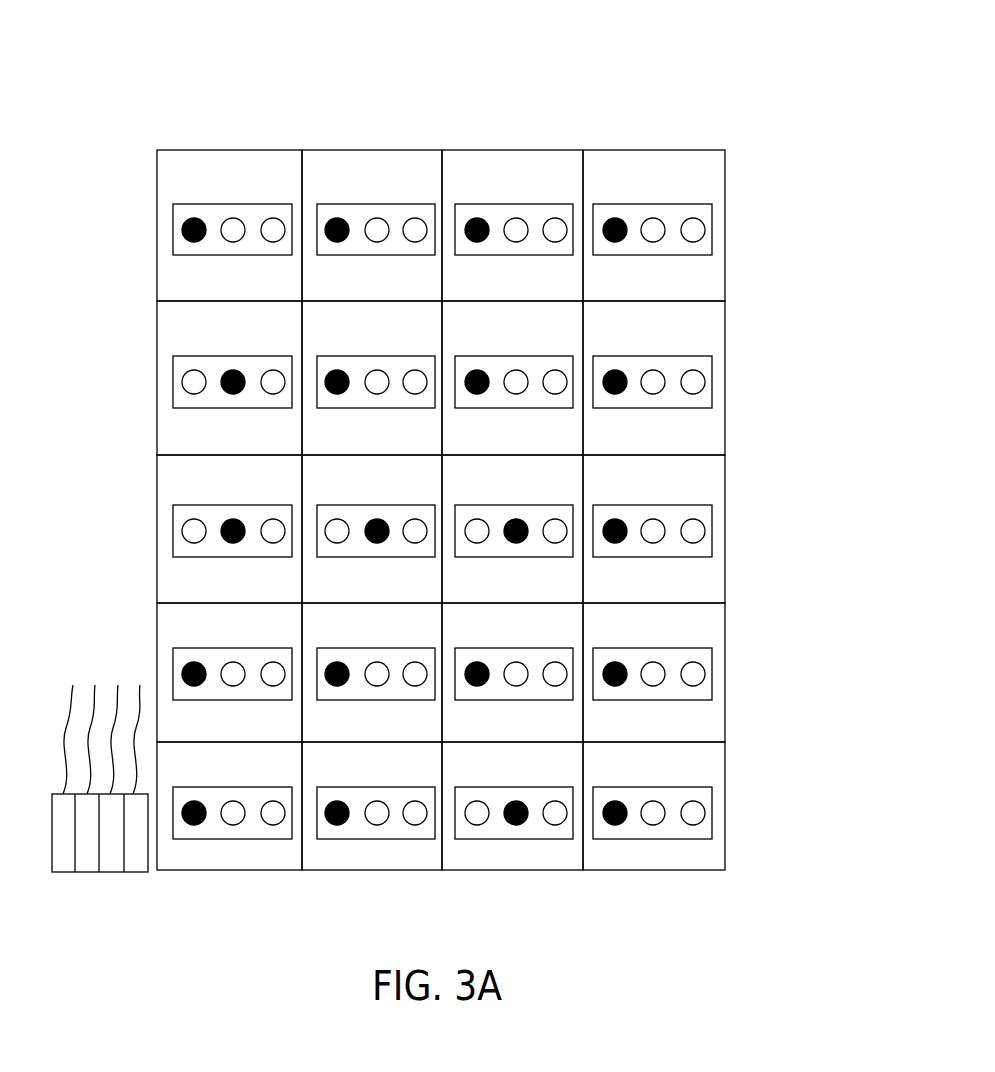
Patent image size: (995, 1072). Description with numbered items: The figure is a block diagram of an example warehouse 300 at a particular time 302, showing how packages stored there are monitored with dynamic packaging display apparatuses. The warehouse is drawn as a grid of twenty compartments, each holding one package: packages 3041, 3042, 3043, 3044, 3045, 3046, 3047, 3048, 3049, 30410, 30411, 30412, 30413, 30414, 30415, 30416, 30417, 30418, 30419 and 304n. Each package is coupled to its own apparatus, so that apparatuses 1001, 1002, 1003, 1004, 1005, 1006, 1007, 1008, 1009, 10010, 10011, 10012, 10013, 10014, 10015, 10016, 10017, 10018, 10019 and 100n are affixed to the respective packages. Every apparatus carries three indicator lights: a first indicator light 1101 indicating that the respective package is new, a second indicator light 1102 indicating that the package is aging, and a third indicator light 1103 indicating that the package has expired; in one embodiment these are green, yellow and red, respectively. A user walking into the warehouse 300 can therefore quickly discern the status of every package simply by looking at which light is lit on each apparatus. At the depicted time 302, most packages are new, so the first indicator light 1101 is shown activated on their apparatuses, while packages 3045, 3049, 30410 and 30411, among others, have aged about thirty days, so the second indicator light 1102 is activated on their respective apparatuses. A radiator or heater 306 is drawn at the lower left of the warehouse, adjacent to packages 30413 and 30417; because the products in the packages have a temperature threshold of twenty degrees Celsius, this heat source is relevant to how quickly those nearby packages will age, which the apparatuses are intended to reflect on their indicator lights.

The warehouse 300 is at (577, 48).
The time 302 is at (718, 72).
The radiator or heater 306 is at (93, 862).
The package 3041 is at (245, 157).
The package 3042 is at (368, 157).
The package 3043 is at (497, 157).
The package 3044 is at (630, 157).
The package 3045 is at (200, 323).
The package 3046 is at (327, 323).
The package 3047 is at (477, 323).
The package 3048 is at (620, 323).
The package 3049 is at (200, 480).
The package 30410 is at (342, 480).
The package 30411 is at (478, 480).
The package 30412 is at (620, 480).
The package 30413 is at (193, 630).
The package 30414 is at (343, 630).
The package 30415 is at (478, 630).
The package 30416 is at (618, 630).
The package 30417 is at (207, 767).
The package 30418 is at (332, 767).
The package 30419 is at (478, 767).
The package 304n is at (618, 767).
The dynamic packaging display apparatus 1001 is at (236, 248).
The dynamic packaging display apparatus 1002 is at (387, 255).
The dynamic packaging display apparatus 1003 is at (523, 255).
The dynamic packaging display apparatus 1004 is at (670, 255).
The dynamic packaging display apparatus 1005 is at (262, 408).
The dynamic packaging display apparatus 1006 is at (395, 408).
The dynamic packaging display apparatus 1007 is at (523, 408).
The dynamic packaging display apparatus 1008 is at (668, 408).
The dynamic packaging display apparatus 1009 is at (248, 557).
The dynamic packaging display apparatus 10010 is at (390, 557).
The dynamic packaging display apparatus 10011 is at (523, 557).
The dynamic packaging display apparatus 10012 is at (665, 557).
The dynamic packaging display apparatus 10013 is at (250, 700).
The dynamic packaging display apparatus 10014 is at (388, 700).
The dynamic packaging display apparatus 10015 is at (523, 700).
The dynamic packaging display apparatus 10016 is at (665, 700).
The dynamic packaging display apparatus 10017 is at (260, 839).
The dynamic packaging display apparatus 10018 is at (397, 839).
The dynamic packaging display apparatus 10019 is at (540, 839).
The dynamic packaging display apparatus 100n is at (680, 839).
The first indicator light 1101 is at (193, 217).
The second indicator light 1102 is at (230, 217).
The third indicator light 1103 is at (271, 197).